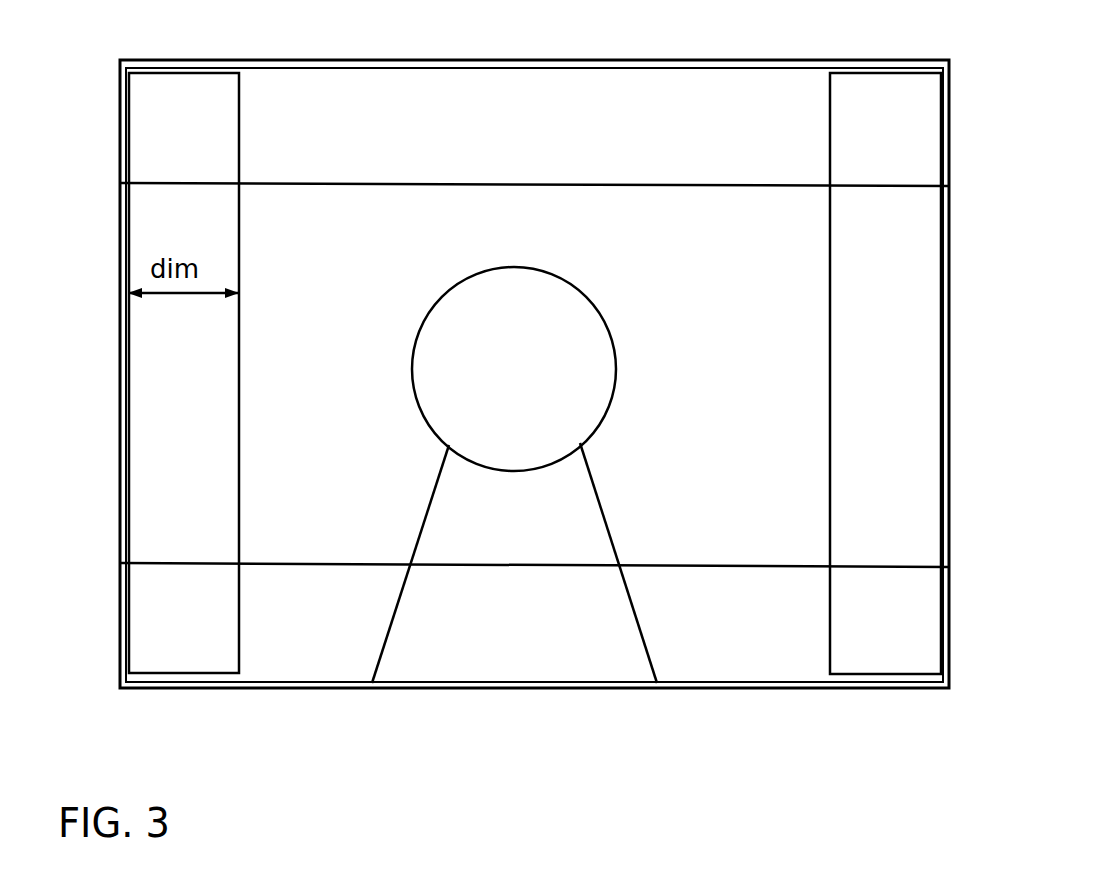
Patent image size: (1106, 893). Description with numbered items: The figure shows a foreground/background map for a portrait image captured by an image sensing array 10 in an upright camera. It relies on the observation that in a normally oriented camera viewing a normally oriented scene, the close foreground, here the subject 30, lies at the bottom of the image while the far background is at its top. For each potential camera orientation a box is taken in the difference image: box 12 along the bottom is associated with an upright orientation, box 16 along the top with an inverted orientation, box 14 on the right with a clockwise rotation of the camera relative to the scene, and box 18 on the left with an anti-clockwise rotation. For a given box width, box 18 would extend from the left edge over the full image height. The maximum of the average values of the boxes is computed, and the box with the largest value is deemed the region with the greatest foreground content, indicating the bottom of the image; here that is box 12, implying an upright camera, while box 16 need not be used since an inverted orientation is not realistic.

The image sensing array 10 is at (732, 337).
The box 12 is at (738, 662).
The box 14 is at (922, 390).
The box 16 is at (565, 129).
The box 18 is at (162, 387).
The subject 30 is at (537, 376).